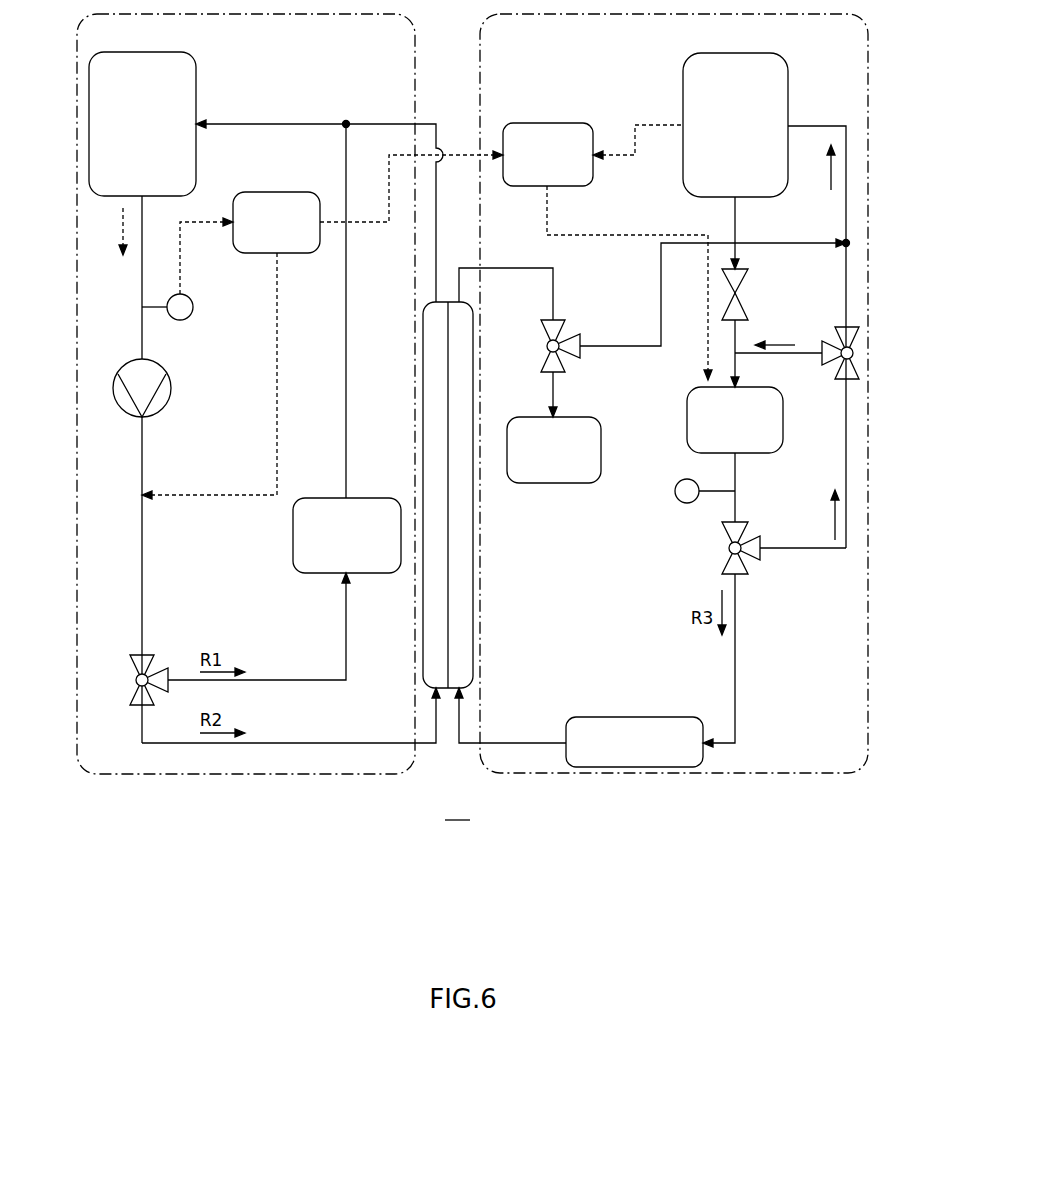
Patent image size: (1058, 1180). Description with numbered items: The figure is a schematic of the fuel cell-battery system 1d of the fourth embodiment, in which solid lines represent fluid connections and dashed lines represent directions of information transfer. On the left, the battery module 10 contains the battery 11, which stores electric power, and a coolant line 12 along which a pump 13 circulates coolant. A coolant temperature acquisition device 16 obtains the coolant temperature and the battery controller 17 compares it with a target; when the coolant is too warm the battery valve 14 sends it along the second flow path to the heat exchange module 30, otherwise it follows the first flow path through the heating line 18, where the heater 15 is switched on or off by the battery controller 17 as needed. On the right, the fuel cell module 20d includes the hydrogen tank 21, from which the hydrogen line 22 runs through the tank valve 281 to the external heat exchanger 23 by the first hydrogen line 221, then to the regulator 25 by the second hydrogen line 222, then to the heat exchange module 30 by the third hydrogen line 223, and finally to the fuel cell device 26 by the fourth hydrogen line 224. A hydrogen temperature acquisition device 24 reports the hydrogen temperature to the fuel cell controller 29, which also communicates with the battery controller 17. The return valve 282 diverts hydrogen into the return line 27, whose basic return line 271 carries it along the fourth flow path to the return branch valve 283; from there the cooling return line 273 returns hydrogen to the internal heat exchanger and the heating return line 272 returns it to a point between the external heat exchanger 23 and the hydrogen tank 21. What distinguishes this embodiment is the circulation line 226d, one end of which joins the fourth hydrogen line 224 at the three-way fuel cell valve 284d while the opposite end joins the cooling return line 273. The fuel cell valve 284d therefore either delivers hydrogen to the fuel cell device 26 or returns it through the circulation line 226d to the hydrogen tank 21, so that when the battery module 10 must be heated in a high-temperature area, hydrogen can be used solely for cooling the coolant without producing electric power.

The fuel cell-battery system 1d is at (457, 809).
The battery module 10 is at (247, 778).
The battery 11 is at (198, 92).
The coolant line 12 is at (140, 285).
The pump 13 is at (166, 402).
The battery valve 14 is at (158, 668).
The heater 15 is at (292, 535).
The coolant temperature acquisition device 16 is at (190, 319).
The battery controller 17 is at (300, 256).
The heating line 18 is at (298, 678).
The fuel cell module 20d is at (673, 778).
The hydrogen tank 21 is at (790, 87).
The hydrogen line 22 is at (550, 675).
The first hydrogen line 221 is at (733, 213).
The second hydrogen line 222 is at (734, 470).
The third hydrogen line 223 is at (537, 741).
The fourth hydrogen line 224 is at (524, 268).
The circulation line 226d is at (662, 277).
The external heat exchanger 23 is at (700, 385).
The hydrogen temperature acquisition device 24 is at (676, 503).
The regulator 25 is at (633, 715).
The fuel cell device 26 is at (528, 485).
The return line 27 is at (845, 640).
The basic return line 271 is at (820, 551).
The heating return line 272 is at (800, 356).
The cooling return line 273 is at (849, 203).
The tank valve 281 is at (746, 305).
The return valve 282 is at (749, 523).
The return branch valve 283 is at (833, 382).
The fuel cell valve 284d is at (540, 325).
The fuel cell controller 29 is at (547, 121).
The heat exchange module 30 is at (447, 728).